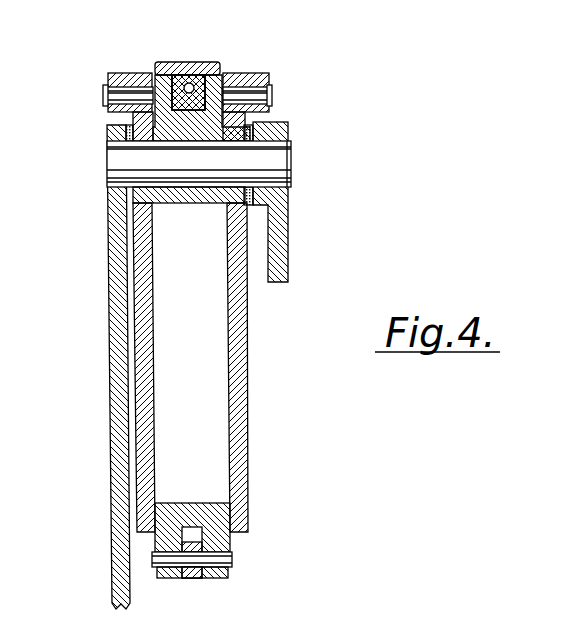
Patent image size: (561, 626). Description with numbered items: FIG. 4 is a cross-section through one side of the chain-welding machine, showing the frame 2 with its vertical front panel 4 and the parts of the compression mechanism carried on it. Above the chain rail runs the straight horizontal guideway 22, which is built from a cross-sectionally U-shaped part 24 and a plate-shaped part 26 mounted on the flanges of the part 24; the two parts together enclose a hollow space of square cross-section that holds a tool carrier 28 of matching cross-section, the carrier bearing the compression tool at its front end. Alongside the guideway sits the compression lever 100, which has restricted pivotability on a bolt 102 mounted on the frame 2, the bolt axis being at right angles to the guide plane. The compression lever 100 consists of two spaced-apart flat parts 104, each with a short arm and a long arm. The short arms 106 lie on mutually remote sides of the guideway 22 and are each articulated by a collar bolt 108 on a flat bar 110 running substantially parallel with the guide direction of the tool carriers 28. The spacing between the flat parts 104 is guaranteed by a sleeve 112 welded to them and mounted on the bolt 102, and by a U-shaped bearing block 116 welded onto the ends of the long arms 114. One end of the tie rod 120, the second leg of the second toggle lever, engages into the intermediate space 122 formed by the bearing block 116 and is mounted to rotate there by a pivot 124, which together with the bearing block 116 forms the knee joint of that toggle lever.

The frame 2 is at (292, 257).
The front panel 4 is at (113, 245).
The guideway 22 is at (215, 57).
The U-shaped part 24 is at (163, 85).
The plate-shaped part 26 is at (190, 63).
The tool carrier 28 is at (186, 100).
The compression lever 100 is at (233, 389).
The bolt 102 is at (113, 160).
The flat parts 104 is at (225, 331).
The short arms 106 is at (140, 73).
The collar bolt 108 is at (105, 93).
The flat bar 110 is at (118, 75).
The sleeve 112 is at (190, 196).
The long arms 114 is at (238, 432).
The bearing block 116 is at (193, 503).
The tie rod 120 is at (198, 578).
The intermediate space 122 is at (200, 533).
The pivot 124 is at (225, 560).